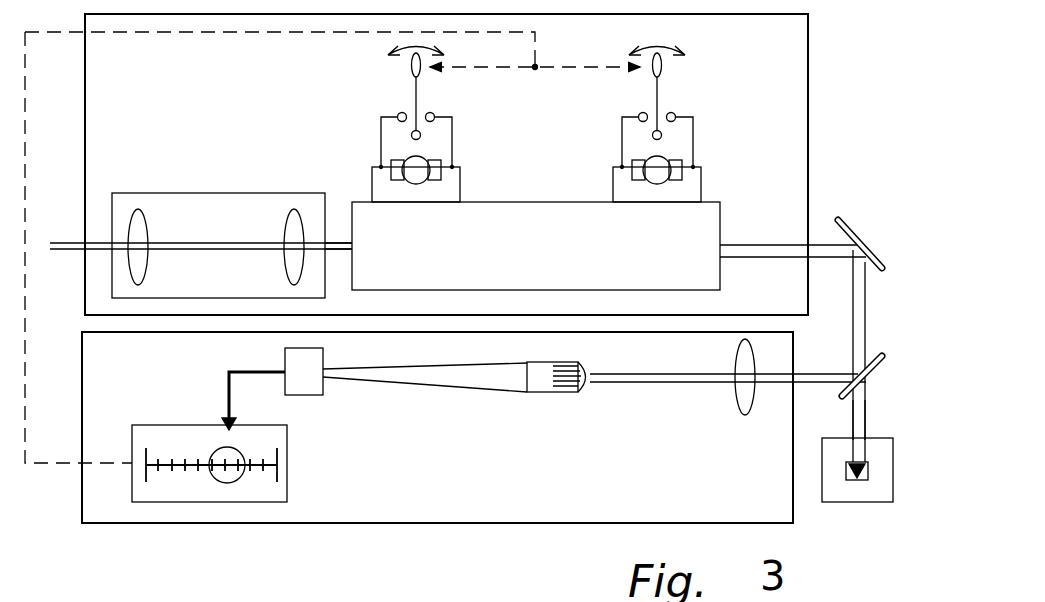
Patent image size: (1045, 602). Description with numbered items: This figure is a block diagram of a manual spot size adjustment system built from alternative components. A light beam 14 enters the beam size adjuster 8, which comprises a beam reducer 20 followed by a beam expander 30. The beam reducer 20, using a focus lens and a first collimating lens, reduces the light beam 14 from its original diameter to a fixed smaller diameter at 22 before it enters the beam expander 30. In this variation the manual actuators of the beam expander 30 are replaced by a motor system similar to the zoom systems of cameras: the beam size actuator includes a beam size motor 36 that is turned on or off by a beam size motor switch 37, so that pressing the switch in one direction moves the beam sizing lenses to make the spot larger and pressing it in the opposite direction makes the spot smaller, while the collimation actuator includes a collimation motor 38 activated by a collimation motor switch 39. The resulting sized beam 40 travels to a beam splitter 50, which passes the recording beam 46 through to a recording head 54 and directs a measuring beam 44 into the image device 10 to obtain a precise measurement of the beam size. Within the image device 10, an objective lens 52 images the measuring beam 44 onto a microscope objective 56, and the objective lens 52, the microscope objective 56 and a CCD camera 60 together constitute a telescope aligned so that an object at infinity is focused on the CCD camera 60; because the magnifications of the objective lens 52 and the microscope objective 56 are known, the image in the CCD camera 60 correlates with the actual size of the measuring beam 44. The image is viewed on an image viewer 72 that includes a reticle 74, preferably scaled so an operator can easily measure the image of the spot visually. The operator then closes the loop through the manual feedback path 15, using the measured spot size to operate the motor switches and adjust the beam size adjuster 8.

The beam size adjuster 8 is at (240, 130).
The image device 10 is at (483, 488).
The light beam 14 is at (68, 243).
The manual feedback path 15 is at (25, 128).
The beam reducer 20 is at (178, 193).
The fixed smaller diameter 22 is at (333, 247).
The beam expander 30 is at (553, 202).
The beam size motor 36 is at (450, 183).
The beam size motor switch 37 is at (408, 90).
The collimation motor 38 is at (712, 178).
The collimation motor switch 39 is at (645, 85).
The sized beam 40 is at (768, 245).
The measuring beam 44 is at (838, 359).
The recording beam 46 is at (852, 428).
The beam splitter 50 is at (872, 366).
The objective lens 52 is at (743, 415).
The recording head 54 is at (866, 482).
The microscope objective 56 is at (556, 393).
The CCD camera 60 is at (323, 388).
The image viewer 72 is at (287, 437).
The reticle 74 is at (215, 448).